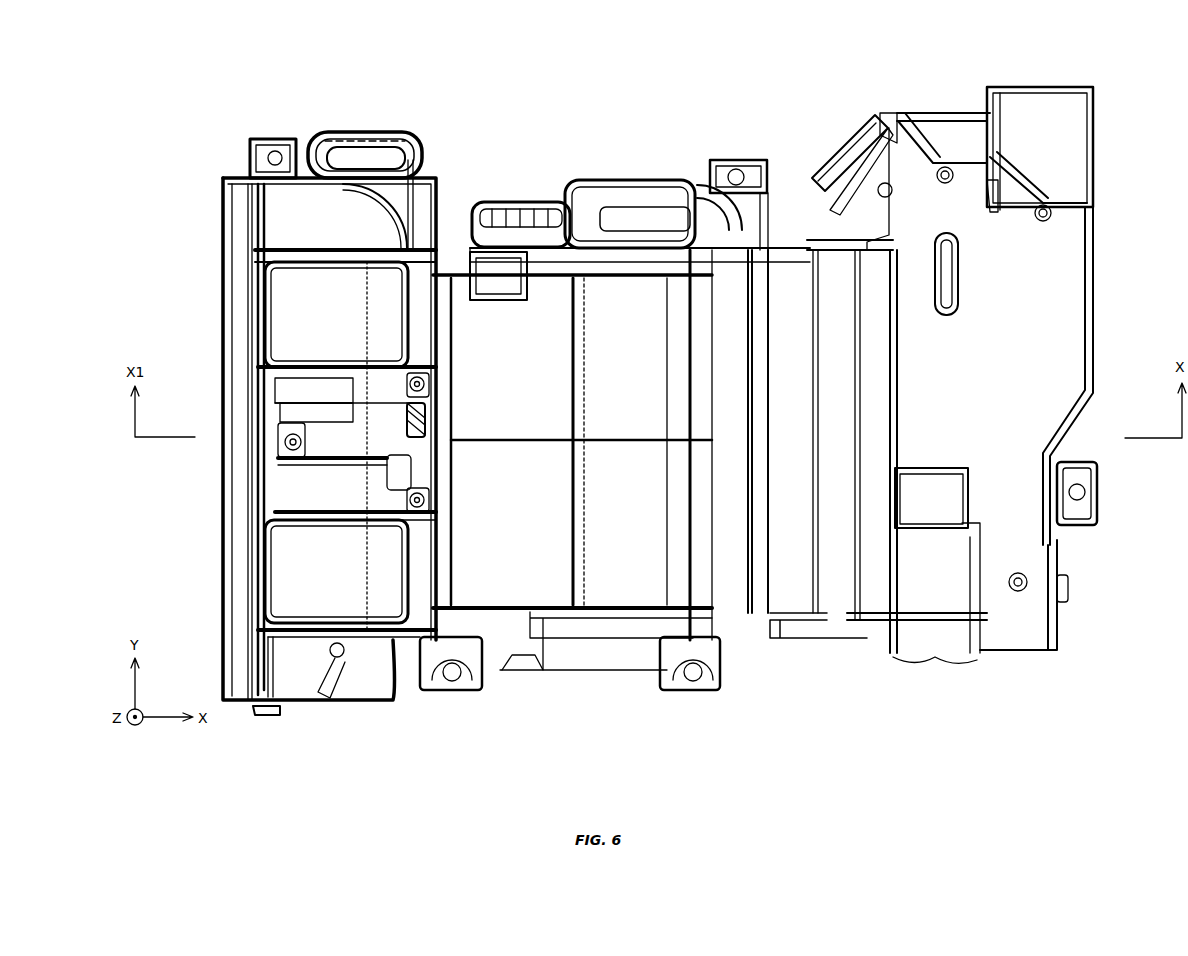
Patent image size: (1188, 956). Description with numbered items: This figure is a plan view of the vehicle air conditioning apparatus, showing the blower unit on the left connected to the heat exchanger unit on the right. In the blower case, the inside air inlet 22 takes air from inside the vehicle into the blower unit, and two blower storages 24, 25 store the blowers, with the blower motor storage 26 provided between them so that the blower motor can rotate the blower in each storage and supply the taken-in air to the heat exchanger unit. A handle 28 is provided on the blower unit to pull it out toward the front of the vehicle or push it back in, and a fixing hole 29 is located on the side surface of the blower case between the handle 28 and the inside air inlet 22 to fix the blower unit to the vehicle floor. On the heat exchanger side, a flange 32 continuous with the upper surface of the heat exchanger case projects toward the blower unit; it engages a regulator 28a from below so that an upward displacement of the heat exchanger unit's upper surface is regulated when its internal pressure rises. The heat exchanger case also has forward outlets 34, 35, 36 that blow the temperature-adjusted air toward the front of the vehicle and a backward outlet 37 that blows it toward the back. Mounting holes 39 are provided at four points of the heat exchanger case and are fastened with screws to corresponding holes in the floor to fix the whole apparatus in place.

The inside air inlet 22 is at (222, 523).
The blower storage 24 is at (295, 575).
The blower storage 25 is at (295, 318).
The blower motor storage 26 is at (327, 440).
The handle 28 is at (370, 132).
The connector 28a is at (418, 415).
The fixing hole 29 is at (272, 139).
The flange 32 is at (440, 428).
The forward outlet 34 is at (845, 130).
The forward outlet 35 is at (943, 112).
The forward outlet 36 is at (1037, 87).
The backward outlet 37 is at (1018, 652).
The mounting hole 39 is at (455, 690).